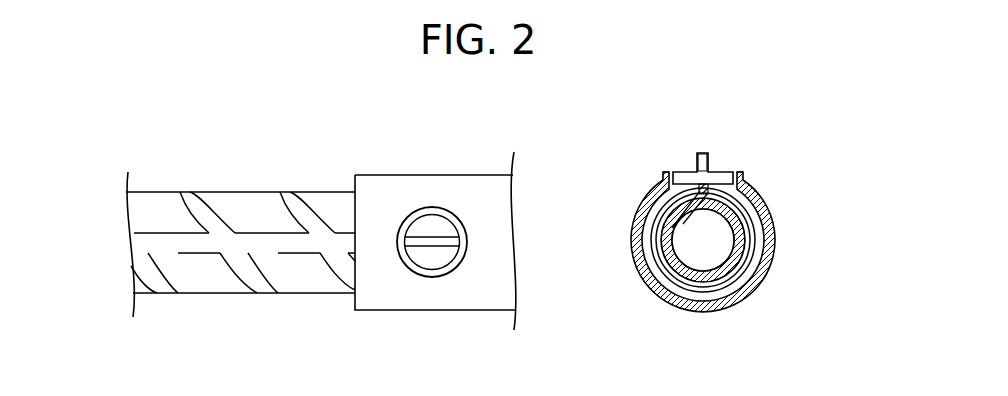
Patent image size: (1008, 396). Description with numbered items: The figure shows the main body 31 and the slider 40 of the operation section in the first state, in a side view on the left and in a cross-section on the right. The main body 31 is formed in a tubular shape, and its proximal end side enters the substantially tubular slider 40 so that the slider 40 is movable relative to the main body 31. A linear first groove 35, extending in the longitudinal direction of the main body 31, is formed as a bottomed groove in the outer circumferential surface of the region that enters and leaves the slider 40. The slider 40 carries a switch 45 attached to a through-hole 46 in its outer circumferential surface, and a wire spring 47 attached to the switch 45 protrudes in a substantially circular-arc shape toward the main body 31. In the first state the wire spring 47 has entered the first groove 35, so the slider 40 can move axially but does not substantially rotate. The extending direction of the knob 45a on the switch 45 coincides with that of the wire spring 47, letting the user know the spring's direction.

The main body 31 is at (211, 172).
The first groove 35 is at (262, 233).
The slider 40 is at (410, 184).
The switch 45 is at (434, 301).
The knob 45a is at (445, 240).
The through-hole 46 is at (675, 178).
The wire spring 47 is at (698, 193).